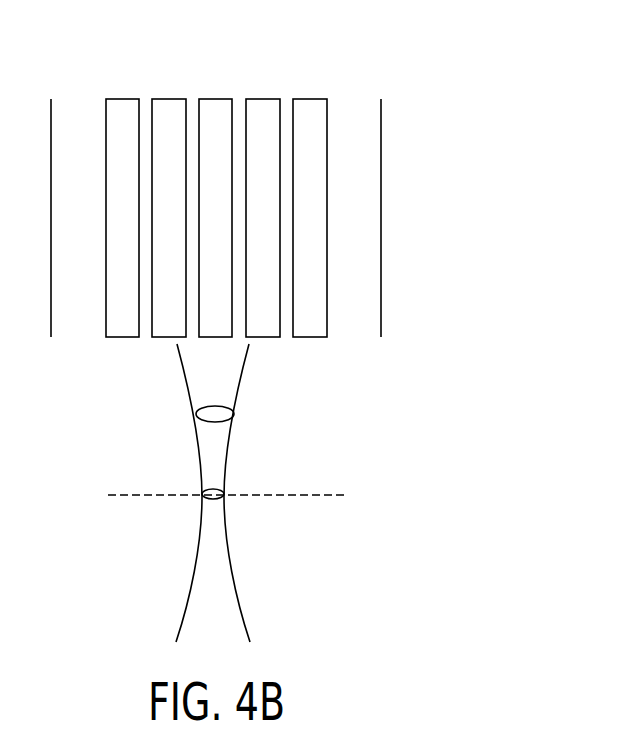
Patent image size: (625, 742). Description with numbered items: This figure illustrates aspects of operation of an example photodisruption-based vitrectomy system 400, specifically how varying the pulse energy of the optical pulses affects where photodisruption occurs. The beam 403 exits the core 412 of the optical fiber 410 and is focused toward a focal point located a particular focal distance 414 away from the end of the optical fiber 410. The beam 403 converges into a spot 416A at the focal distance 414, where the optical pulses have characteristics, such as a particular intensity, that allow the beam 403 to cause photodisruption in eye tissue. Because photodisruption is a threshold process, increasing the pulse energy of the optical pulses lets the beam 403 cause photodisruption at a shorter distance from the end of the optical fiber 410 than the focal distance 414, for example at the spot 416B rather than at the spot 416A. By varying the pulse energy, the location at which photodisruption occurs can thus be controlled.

The optical system 400 is at (473, 120).
The optical fiber 410 is at (381, 248).
The core 412 is at (222, 98).
The beam 403 is at (182, 372).
The focal distance 414 is at (337, 492).
The spot 416A is at (223, 497).
The spot 416B is at (230, 416).